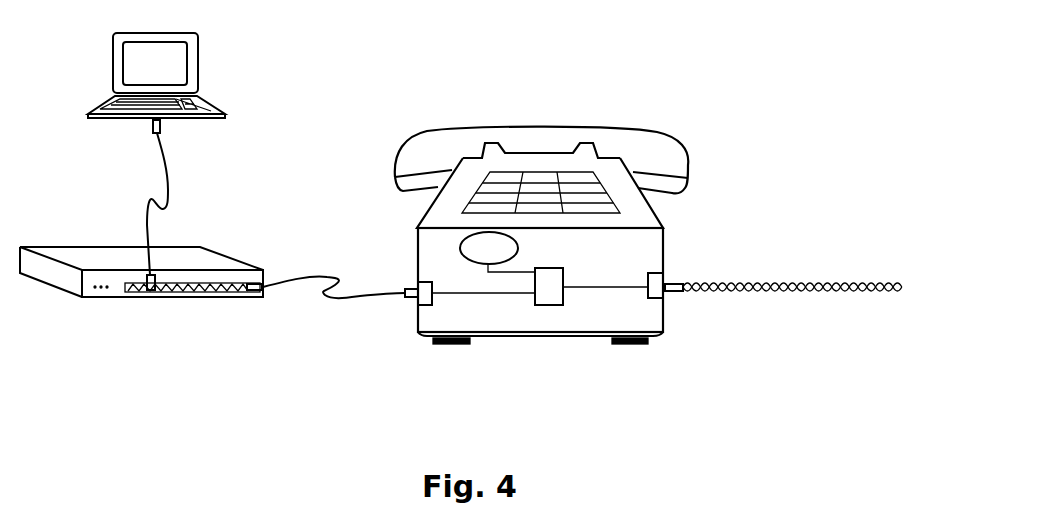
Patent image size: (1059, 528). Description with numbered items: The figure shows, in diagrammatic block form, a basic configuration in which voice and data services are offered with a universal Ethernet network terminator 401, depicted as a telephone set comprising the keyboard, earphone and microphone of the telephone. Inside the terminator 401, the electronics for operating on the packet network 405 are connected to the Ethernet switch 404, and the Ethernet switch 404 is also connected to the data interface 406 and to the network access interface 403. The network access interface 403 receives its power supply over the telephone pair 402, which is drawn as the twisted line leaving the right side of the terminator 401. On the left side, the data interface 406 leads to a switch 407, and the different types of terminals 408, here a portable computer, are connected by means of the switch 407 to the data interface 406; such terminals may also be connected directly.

The universal Ethernet network terminator 401 is at (541, 98).
The telephone pair 402 is at (763, 268).
The network access interface 403 is at (655, 311).
The Ethernet switch 404 is at (550, 314).
The electronics for operating on the packet network 405 is at (531, 247).
The data interface 406 is at (425, 314).
The switch 407 is at (188, 314).
The terminals 408 is at (207, 136).